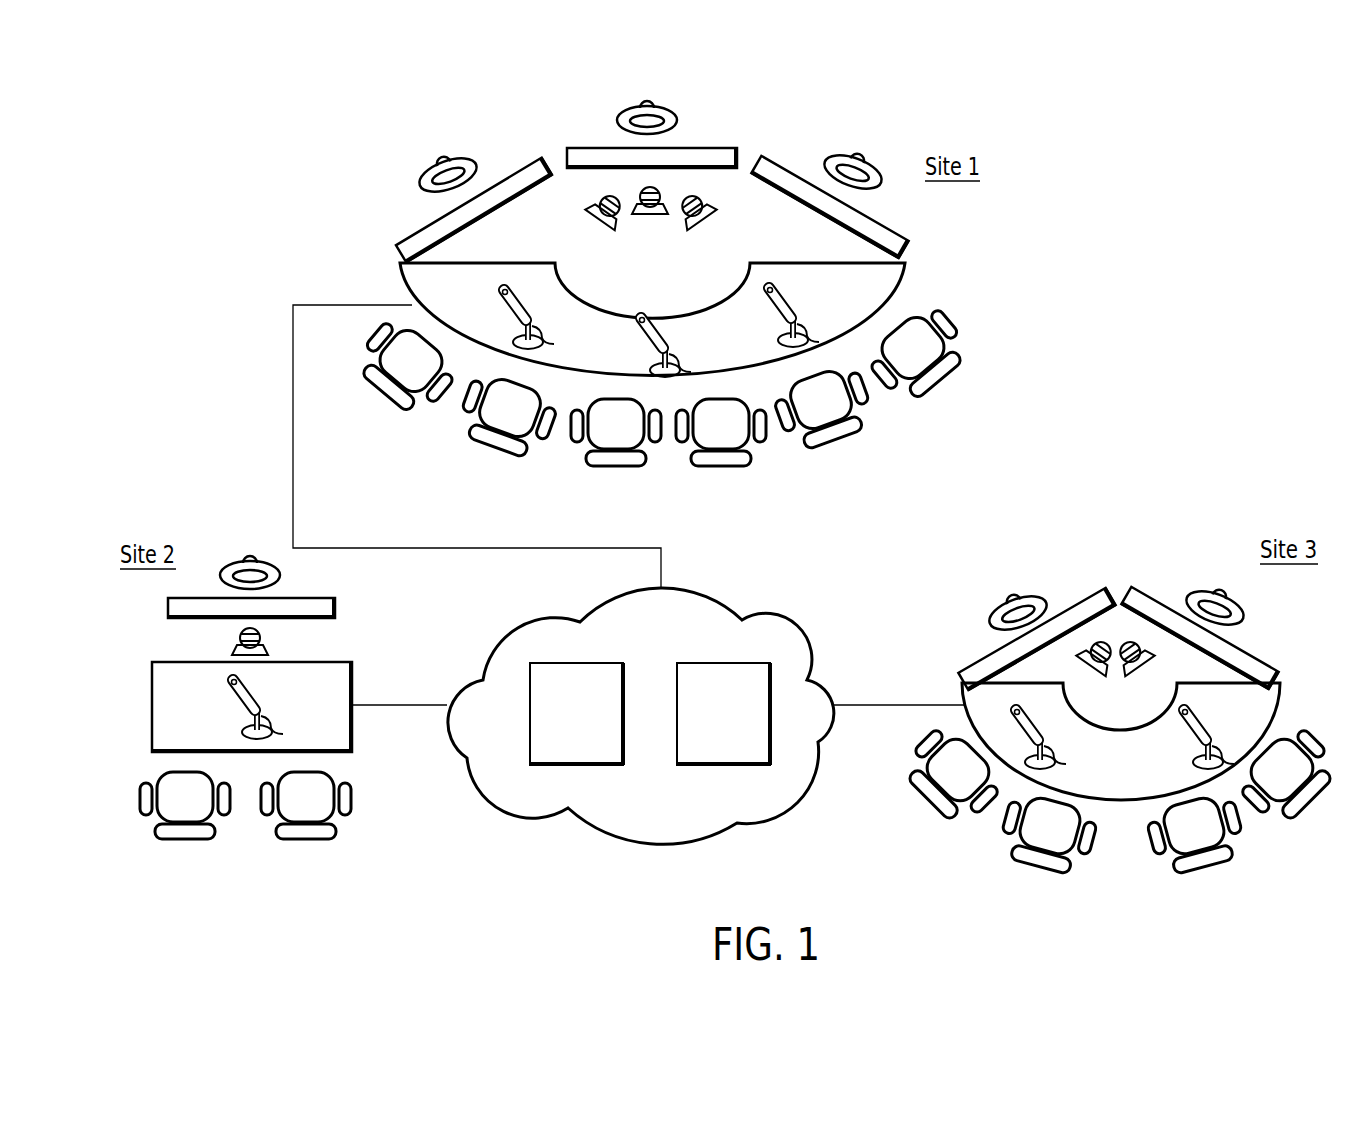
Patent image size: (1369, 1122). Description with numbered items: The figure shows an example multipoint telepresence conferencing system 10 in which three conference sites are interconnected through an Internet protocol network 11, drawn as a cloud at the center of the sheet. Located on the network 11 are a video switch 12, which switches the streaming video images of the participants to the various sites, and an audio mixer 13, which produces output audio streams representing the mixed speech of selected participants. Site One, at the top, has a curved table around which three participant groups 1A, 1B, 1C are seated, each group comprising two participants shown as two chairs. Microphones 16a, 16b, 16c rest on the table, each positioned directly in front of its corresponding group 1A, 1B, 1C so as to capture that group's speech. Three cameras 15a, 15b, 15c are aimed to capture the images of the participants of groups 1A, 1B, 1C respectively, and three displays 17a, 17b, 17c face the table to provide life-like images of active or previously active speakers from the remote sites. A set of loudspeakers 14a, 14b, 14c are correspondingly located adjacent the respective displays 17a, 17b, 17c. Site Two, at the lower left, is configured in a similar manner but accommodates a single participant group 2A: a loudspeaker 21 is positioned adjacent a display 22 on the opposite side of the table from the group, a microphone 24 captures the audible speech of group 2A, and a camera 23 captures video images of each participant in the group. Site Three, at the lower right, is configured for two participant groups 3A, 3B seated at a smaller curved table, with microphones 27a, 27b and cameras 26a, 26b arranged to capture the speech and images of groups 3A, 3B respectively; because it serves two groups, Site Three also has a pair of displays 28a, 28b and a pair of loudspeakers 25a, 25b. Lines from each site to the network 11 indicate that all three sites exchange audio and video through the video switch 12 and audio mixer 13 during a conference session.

The multipoint telepresence conferencing system 10 is at (1088, 408).
The Internet protocol network 11 is at (782, 622).
The video switch 12 is at (566, 767).
The audio mixer 13 is at (733, 767).
The loudspeaker 14a is at (432, 166).
The loudspeaker 14b is at (620, 115).
The loudspeaker 14c is at (842, 152).
The camera 15a is at (601, 224).
The camera 15b is at (650, 222).
The camera 15c is at (703, 224).
The microphone 16a is at (518, 292).
The microphone 16b is at (664, 320).
The microphone 16c is at (790, 297).
The display 17a is at (410, 236).
The display 17b is at (712, 147).
The display 17c is at (898, 233).
The participant group 1A is at (455, 391).
The participant group 1B is at (668, 462).
The participant group 1C is at (872, 383).
The loudspeaker 21 is at (238, 557).
The display 22 is at (342, 607).
The camera 23 is at (268, 643).
The microphone 24 is at (253, 692).
The participant group 2A is at (245, 841).
The loudspeaker 25a is at (1022, 593).
The loudspeaker 25b is at (1190, 590).
The camera 26a is at (1087, 668).
The camera 26b is at (1144, 668).
The microphone 27a is at (1045, 730).
The microphone 27b is at (1213, 718).
The display 28a is at (975, 660).
The display 28b is at (1258, 658).
The participant group 3A is at (991, 809).
The participant group 3B is at (1243, 809).